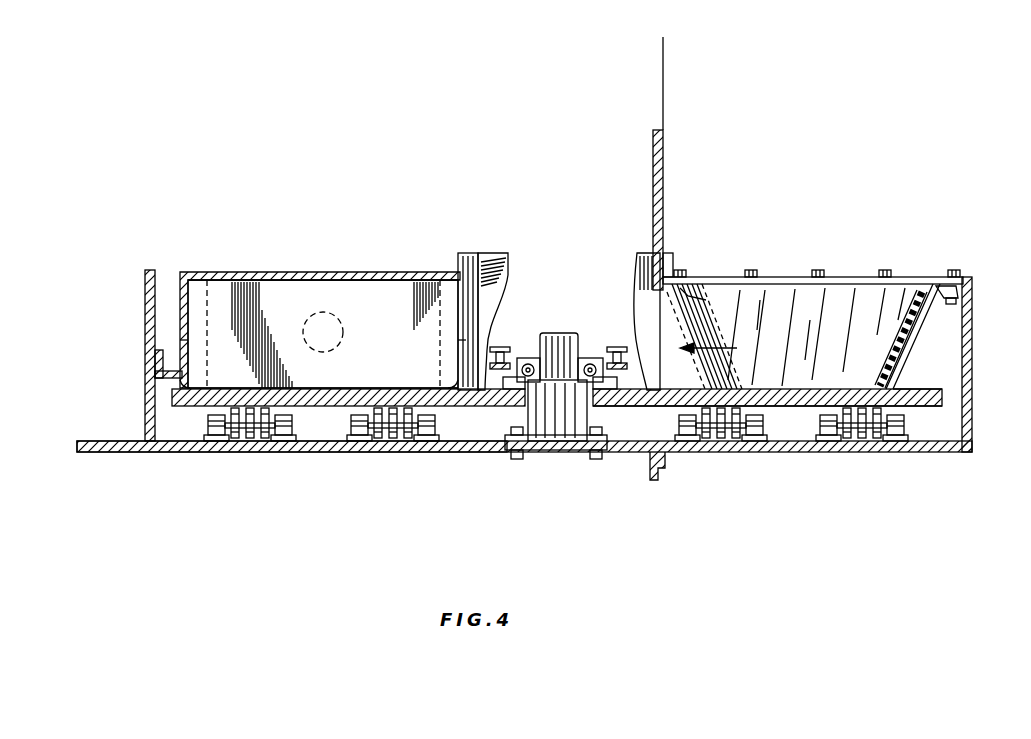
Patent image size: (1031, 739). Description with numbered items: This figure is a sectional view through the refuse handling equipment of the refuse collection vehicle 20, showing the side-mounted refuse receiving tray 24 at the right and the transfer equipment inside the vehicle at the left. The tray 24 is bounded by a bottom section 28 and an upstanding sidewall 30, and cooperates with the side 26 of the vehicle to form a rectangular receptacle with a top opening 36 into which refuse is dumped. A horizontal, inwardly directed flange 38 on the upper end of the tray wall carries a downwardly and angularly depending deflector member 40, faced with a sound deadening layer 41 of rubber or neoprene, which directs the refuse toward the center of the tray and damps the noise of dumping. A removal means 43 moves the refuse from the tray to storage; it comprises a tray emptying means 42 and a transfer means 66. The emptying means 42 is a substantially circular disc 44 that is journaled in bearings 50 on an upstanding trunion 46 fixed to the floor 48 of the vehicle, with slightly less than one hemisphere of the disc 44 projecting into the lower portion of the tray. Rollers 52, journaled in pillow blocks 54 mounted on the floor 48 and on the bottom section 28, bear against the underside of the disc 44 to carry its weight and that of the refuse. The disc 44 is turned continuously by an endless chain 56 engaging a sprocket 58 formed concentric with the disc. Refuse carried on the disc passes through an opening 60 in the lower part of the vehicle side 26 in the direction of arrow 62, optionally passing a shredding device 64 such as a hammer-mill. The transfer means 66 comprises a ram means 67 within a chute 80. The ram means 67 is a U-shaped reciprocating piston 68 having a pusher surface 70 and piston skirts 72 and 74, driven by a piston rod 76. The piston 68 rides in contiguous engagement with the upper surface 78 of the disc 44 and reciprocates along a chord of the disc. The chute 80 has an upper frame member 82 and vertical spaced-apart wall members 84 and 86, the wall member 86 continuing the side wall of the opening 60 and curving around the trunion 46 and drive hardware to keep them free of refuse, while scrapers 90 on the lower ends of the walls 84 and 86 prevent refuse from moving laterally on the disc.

The vehicle 20 is at (663, 100).
The refuse receiving tray 24 is at (835, 351).
The side of the vehicle 26 is at (663, 156).
The bottom section 28 is at (952, 452).
The upstanding sidewall 30 is at (972, 396).
The top opening 36 is at (776, 286).
The flange 38 is at (860, 284).
The deflector member 40 is at (706, 300).
The sound deadening layer 41 is at (934, 287).
The tray emptying means 42 is at (899, 389).
The removal means 43 is at (467, 252).
The circular disc 44 is at (926, 407).
The trunion 46 is at (560, 333).
The floor 48 is at (480, 452).
The bearings 50 is at (520, 356).
The rollers 52 is at (265, 439).
The pillow blocks 54 is at (293, 423).
The endless chain 56 is at (500, 347).
The sprocket 58 is at (532, 357).
The opening 60 is at (690, 331).
The arrow 62 is at (712, 346).
The shredding device 64 is at (509, 256).
The transfer means 66 is at (214, 272).
The ram means 67 is at (355, 292).
The reciprocating piston 68 is at (415, 279).
The pusher surface 70 is at (310, 277).
The piston skirt 72 is at (208, 336).
The piston skirt 74 is at (439, 336).
The piston rod 76 is at (305, 323).
The upper surface of the disc 78 is at (326, 390).
The chute 80 is at (178, 285).
The upper frame member 82 is at (259, 280).
The vertical wall member 84 is at (188, 362).
The vertical wall member 86 is at (459, 363).
The scrapers 90 is at (188, 386).